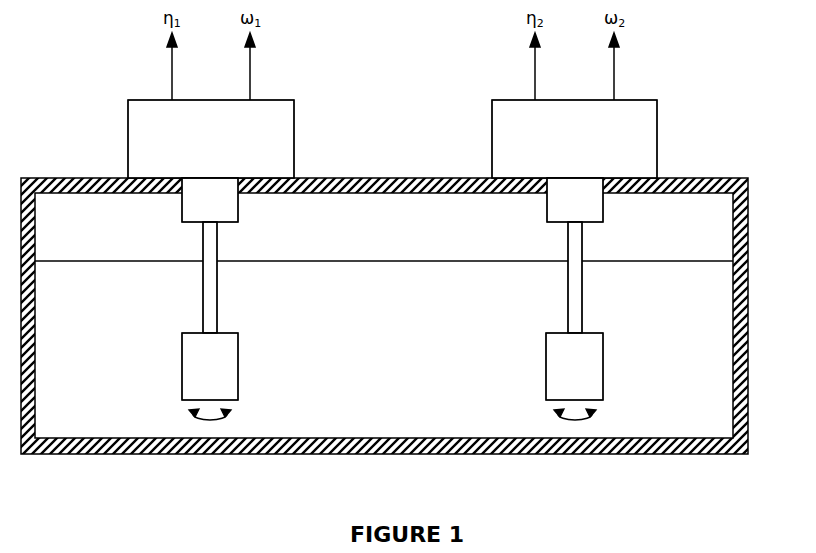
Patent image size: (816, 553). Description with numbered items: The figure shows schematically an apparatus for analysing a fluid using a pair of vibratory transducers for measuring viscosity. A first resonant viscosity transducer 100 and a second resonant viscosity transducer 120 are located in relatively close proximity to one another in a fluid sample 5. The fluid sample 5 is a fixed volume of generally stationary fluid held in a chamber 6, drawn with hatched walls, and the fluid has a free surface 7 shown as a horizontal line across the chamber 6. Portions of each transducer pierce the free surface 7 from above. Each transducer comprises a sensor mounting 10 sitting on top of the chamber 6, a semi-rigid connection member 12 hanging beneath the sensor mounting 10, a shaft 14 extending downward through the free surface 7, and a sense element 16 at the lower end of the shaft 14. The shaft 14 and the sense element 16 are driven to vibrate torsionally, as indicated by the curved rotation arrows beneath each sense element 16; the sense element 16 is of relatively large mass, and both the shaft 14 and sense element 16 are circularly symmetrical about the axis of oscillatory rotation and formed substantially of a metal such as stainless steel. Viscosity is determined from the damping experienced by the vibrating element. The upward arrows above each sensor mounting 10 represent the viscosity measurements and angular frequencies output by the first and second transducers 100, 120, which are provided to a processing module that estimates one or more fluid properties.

The fluid sample 5 is at (95, 385).
The chamber 6 is at (700, 178).
The free surface 7 is at (103, 261).
The sensor mounting 10 is at (492, 123).
The semi-rigid connection member 12 is at (548, 207).
The shaft 14 is at (548, 288).
The sense element 16 is at (548, 372).
The first resonant viscosity transducer 100 is at (118, 146).
The second resonant viscosity transducer 120 is at (668, 152).